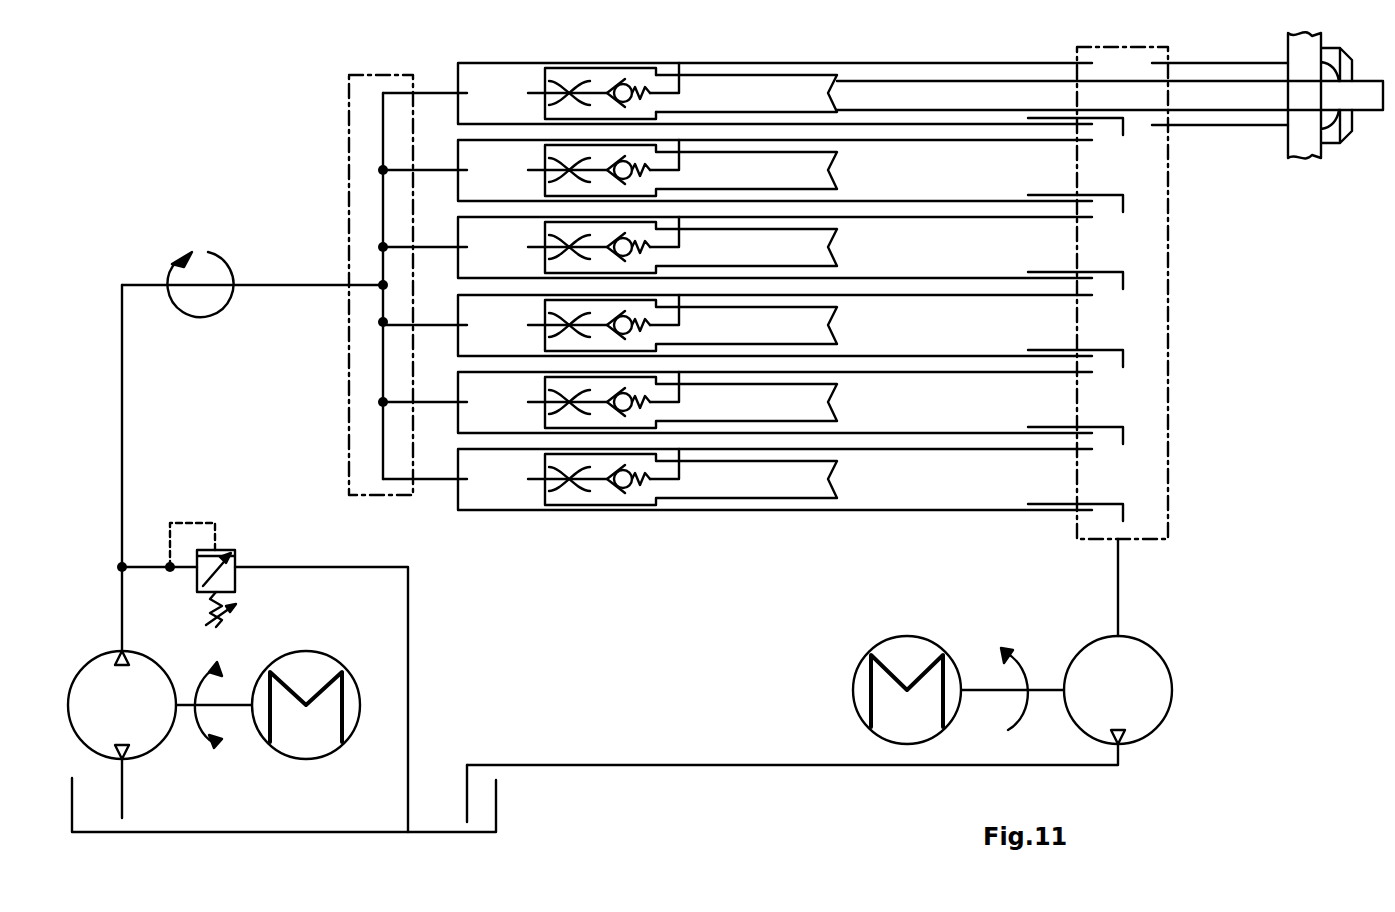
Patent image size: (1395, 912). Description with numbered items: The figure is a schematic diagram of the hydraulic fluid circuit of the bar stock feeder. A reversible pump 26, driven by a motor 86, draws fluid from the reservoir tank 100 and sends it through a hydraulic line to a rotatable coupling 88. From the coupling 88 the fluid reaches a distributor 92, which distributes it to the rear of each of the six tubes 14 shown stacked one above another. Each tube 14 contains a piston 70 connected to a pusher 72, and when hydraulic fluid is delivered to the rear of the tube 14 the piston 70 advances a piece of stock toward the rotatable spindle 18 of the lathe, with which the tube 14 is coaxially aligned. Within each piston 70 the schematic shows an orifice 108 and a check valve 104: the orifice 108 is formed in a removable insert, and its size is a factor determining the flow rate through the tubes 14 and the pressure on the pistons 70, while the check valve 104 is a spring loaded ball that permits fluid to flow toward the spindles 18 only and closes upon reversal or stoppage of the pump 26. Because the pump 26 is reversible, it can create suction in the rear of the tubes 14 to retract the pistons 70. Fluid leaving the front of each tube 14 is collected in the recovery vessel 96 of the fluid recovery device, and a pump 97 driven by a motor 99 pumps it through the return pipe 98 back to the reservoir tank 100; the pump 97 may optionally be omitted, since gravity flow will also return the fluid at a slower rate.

The tube 14 is at (883, 258).
The rotatable spindle 18 is at (1265, 127).
The pump 26 is at (150, 752).
The piston 70 is at (584, 62).
The pusher 72 is at (745, 90).
The motor 86 is at (306, 652).
The rotatable coupling 88 is at (232, 272).
The distributor 92 is at (347, 182).
The recovery vessel 96 is at (1150, 540).
The pump 97 is at (1172, 707).
The return pipe 98 is at (683, 765).
The motor 99 is at (880, 641).
The reservoir tank 100 is at (496, 797).
The check valve 104 is at (622, 84).
The orifice 108 is at (573, 88).